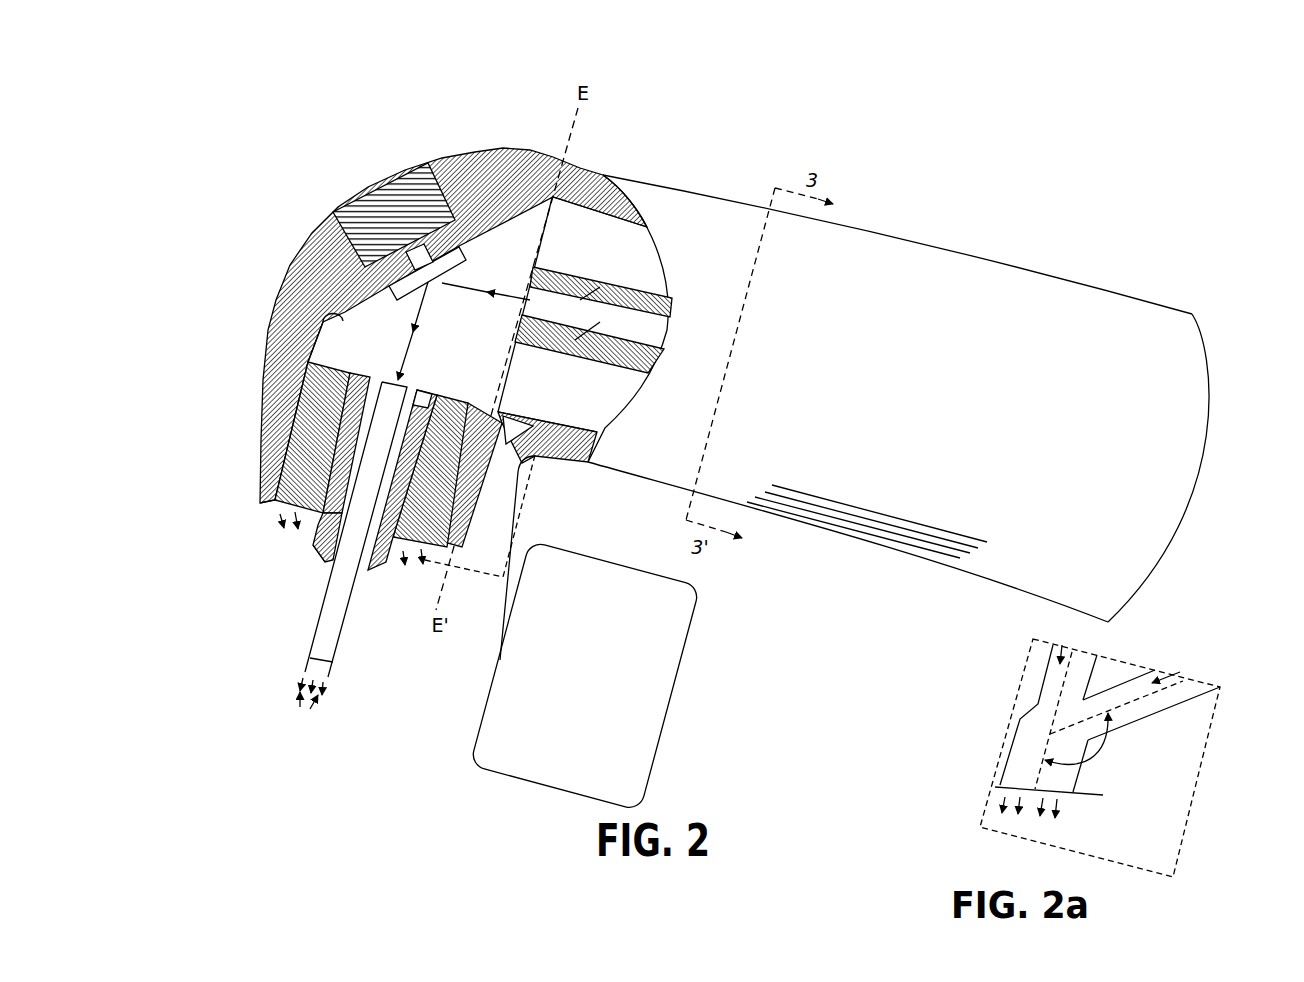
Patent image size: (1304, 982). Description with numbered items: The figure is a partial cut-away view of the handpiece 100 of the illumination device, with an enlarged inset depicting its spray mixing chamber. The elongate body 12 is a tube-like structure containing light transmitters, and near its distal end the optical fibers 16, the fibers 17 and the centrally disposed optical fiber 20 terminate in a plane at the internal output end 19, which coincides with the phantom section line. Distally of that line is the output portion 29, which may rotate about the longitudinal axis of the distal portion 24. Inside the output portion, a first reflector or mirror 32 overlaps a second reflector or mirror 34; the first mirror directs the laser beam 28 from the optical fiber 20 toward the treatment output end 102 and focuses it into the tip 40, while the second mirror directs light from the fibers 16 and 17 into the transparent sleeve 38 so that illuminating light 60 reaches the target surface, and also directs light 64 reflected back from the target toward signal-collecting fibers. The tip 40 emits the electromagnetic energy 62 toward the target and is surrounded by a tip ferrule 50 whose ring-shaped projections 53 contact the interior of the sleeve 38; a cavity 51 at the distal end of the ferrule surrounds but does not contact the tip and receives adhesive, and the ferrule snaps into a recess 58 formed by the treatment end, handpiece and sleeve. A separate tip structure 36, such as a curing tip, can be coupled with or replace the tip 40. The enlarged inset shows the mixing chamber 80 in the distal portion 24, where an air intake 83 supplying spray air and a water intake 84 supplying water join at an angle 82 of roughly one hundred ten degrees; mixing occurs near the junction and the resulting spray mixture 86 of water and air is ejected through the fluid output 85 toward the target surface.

In FIG. 2, the handpiece 100 is at (349, 157).
In FIG. 2, the output portion 29 is at (294, 232).
In FIG. 2, the second reflector or mirror 34 is at (325, 323).
In FIG. 2, the internal output end 19 is at (540, 213).
In FIG. 2, the elongate body 12 is at (880, 243).
In FIG. 2, the optical fibers 16 is at (610, 261).
In FIG. 2, the optical fiber 20 is at (587, 333).
In FIG. 2, the fibers 17 is at (568, 404).
In FIG. 2, the first reflector or mirror 32 is at (393, 299).
In FIG. 2, the beam 28 is at (442, 285).
In FIG. 2, the recess 58 is at (421, 392).
In FIG. 2, the ring-shaped projections 53 is at (325, 432).
In FIG. 2, the sleeve 38 is at (305, 463).
In FIG. 2, the light 60 is at (298, 512).
In FIG. 2, the tip ferrule 50 is at (313, 553).
In FIG. 2, the cavity 51 is at (322, 565).
In FIG. 2, the tip 40 is at (318, 617).
In FIG. 2, the electromagnetic energy 62 is at (335, 665).
In FIG. 2, the light 64 is at (322, 702).
In FIG. 2, the treatment output end 102 is at (263, 718).
In FIG. 2, the mixing chamber 80 is at (533, 481).
In FIG. 2a, the mixing chamber 80 is at (1192, 827).
In FIG. 2, the tip structure 36 is at (574, 681).
In FIG. 2, the distal portion 24 is at (798, 590).
In FIG. 2a, the air intake 83 is at (1047, 669).
In FIG. 2a, the fluid output 85 is at (1027, 755).
In FIG. 2a, the water intake 84 is at (1147, 721).
In FIG. 2a, the angle 82 is at (1104, 766).
In FIG. 2a, the spray mixture 86 is at (1067, 830).